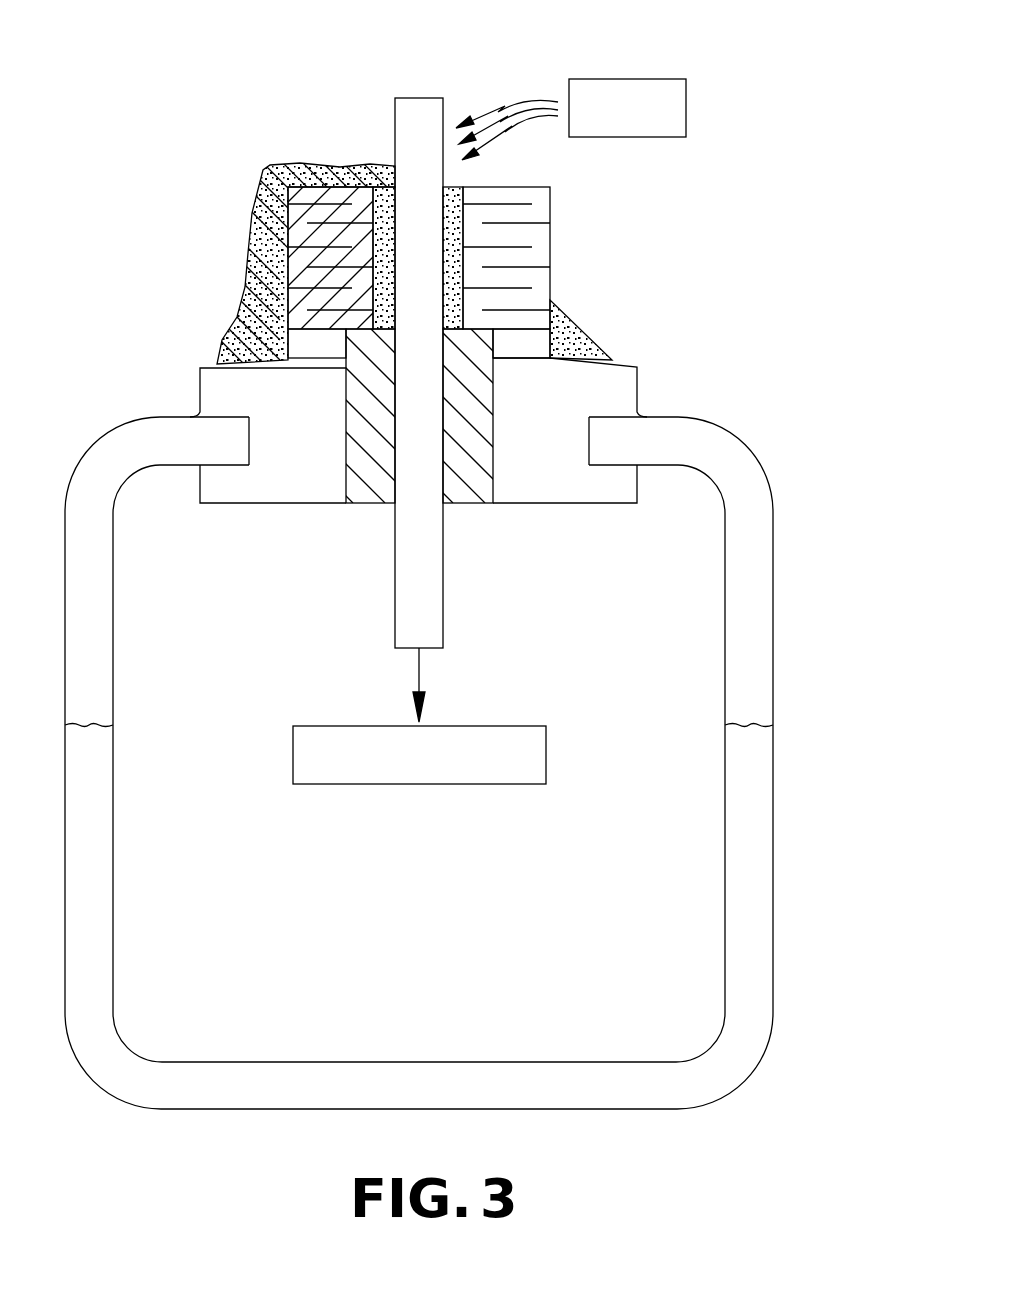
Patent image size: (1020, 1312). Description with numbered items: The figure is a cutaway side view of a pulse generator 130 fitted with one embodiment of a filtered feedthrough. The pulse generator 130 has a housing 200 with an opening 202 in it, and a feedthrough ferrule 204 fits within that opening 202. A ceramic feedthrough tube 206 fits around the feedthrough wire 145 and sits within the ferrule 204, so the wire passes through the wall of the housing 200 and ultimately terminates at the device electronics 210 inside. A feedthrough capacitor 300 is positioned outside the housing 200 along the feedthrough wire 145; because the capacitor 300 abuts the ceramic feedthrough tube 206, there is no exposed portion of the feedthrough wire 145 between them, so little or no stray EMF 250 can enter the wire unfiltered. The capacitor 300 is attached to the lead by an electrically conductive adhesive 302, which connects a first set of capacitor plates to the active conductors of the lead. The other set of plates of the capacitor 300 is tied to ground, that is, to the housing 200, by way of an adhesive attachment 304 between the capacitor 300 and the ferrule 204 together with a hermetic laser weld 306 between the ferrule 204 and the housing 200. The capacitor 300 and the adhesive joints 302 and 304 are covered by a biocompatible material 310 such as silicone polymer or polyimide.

The pulse generator 130 is at (760, 448).
The feedthrough wire 145 is at (418, 98).
The housing 200 is at (775, 664).
The opening 202 is at (587, 447).
The feedthrough ferrule 204 is at (268, 483).
The ceramic feedthrough tube 206 is at (462, 490).
The device electronics 210 is at (318, 726).
The stray EMF 250 is at (627, 78).
The feedthrough capacitor 300 is at (552, 213).
The adhesive 302 is at (456, 187).
The adhesive attachment 304 is at (585, 328).
The hermetic laser weld 306 is at (640, 410).
The biocompatible material 310 is at (250, 253).